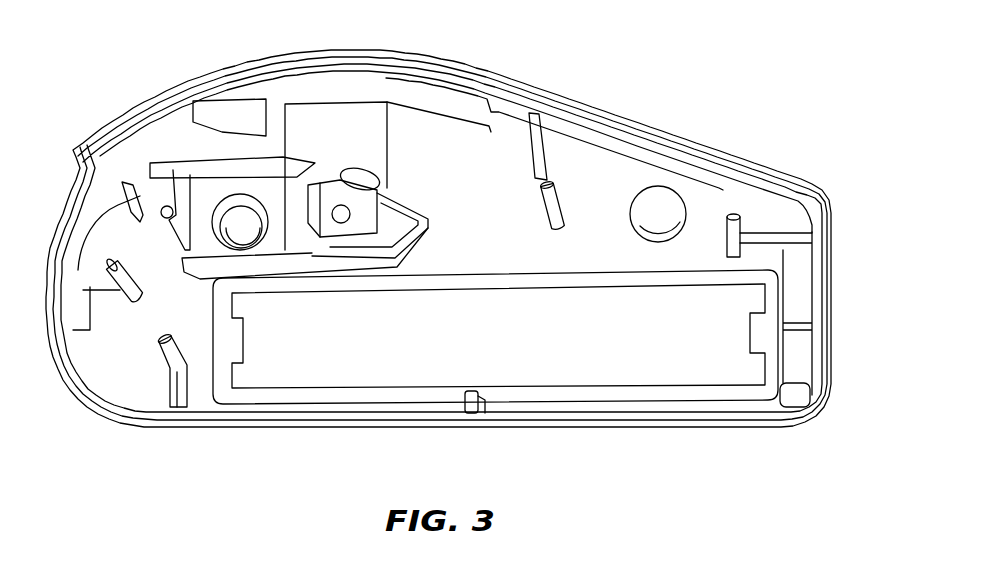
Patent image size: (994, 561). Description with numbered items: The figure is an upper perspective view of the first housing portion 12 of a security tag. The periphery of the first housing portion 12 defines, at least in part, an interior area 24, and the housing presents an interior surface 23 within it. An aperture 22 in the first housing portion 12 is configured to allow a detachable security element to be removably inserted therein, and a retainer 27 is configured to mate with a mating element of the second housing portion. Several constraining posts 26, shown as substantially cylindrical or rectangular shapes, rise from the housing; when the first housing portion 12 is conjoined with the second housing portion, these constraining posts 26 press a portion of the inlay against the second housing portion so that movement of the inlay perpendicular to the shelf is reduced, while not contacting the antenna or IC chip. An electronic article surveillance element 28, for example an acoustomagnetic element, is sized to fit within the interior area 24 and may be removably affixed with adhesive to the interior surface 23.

The first housing portion 12 is at (691, 106).
The aperture 22 is at (340, 205).
The interior surface 23 is at (469, 250).
The interior area 24 is at (442, 156).
The constraining posts 26 is at (548, 183).
The retainer 27 is at (240, 197).
The electronic article surveillance (EAS) element 28 is at (495, 345).